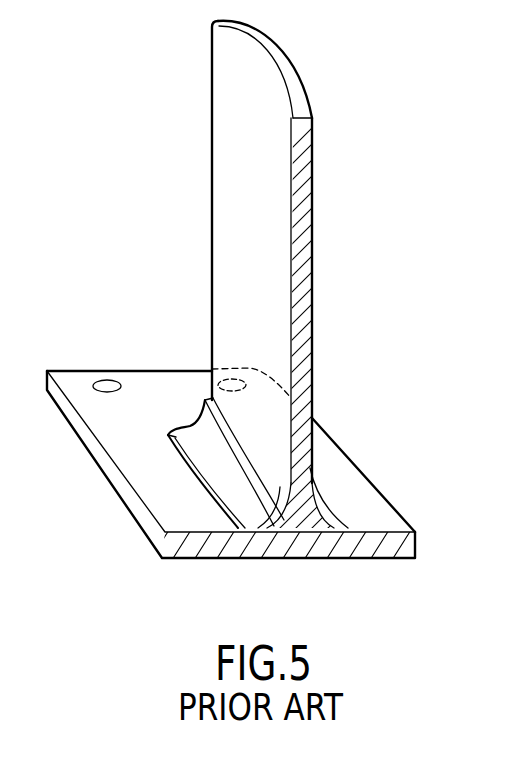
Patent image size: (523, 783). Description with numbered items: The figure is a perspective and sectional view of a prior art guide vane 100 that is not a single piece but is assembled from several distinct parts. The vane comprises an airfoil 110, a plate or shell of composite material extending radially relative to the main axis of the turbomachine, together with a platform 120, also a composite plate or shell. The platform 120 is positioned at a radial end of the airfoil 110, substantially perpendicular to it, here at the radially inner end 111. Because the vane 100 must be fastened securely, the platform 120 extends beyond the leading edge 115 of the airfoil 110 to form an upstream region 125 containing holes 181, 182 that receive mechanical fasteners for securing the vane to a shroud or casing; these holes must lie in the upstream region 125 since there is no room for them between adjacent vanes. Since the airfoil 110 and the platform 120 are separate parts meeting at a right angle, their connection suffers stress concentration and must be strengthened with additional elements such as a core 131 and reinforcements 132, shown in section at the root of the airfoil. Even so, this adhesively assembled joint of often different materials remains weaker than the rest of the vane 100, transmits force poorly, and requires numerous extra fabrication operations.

The guide vane 100 is at (240, 313).
The airfoil 110 is at (303, 277).
The radially inner end 111 is at (268, 258).
The leading edge 115 is at (212, 187).
The platform 120 is at (228, 549).
The upstream region 125 is at (165, 388).
The core 131 is at (295, 532).
The reinforcements 132 is at (243, 498).
The hole 181 is at (106, 385).
The hole 182 is at (246, 385).